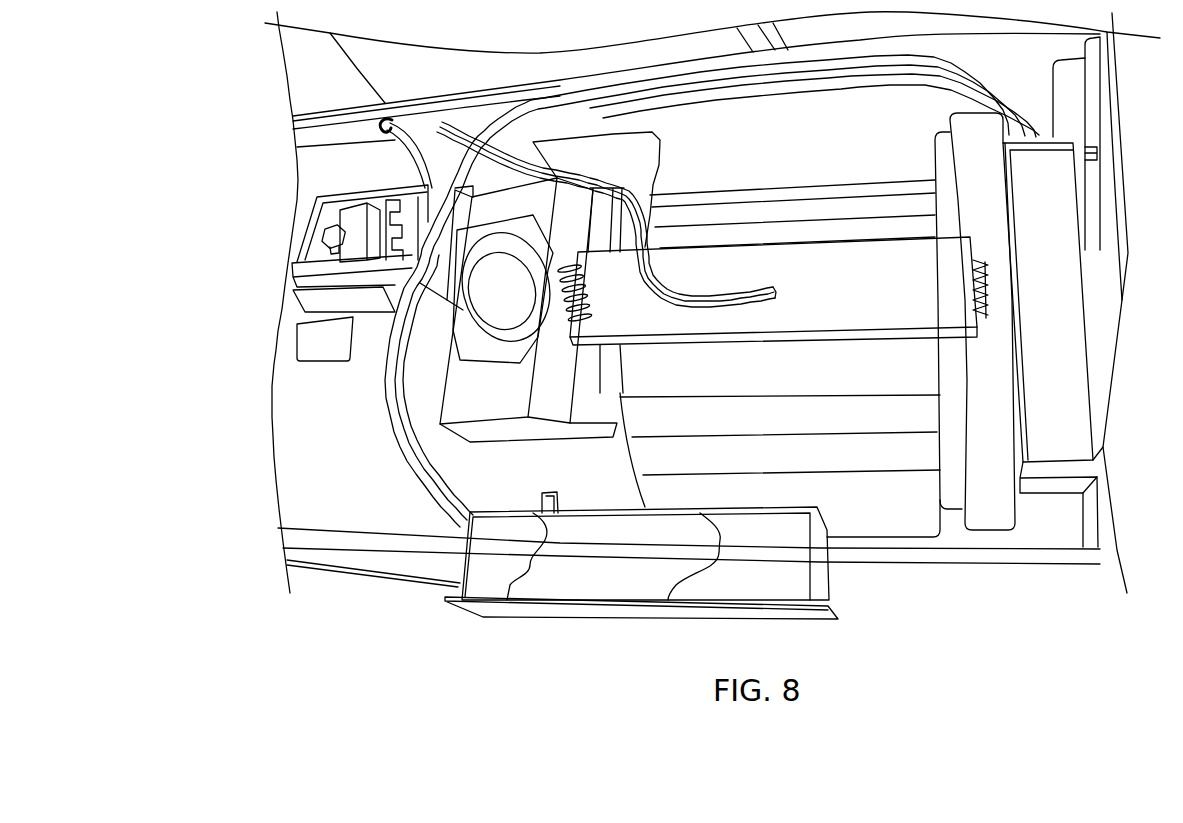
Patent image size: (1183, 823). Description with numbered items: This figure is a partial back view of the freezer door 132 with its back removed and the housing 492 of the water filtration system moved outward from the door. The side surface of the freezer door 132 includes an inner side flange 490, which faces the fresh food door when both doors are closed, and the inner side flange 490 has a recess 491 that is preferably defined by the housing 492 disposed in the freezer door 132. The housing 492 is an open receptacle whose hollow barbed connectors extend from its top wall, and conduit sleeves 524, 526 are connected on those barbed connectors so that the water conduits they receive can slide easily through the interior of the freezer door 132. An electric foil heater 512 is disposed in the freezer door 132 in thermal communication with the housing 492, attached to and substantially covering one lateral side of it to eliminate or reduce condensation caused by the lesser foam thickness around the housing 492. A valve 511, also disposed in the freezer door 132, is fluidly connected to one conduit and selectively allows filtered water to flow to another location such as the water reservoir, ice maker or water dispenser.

The freezer door 132 is at (262, 597).
The inner side flange 490 is at (353, 541).
The recess 491 is at (522, 593).
The housing 492 is at (603, 582).
The valve 511 is at (1099, 252).
The foil heater 512 is at (786, 531).
The conduit sleeve 524 is at (403, 150).
The conduit sleeve 526 is at (410, 368).